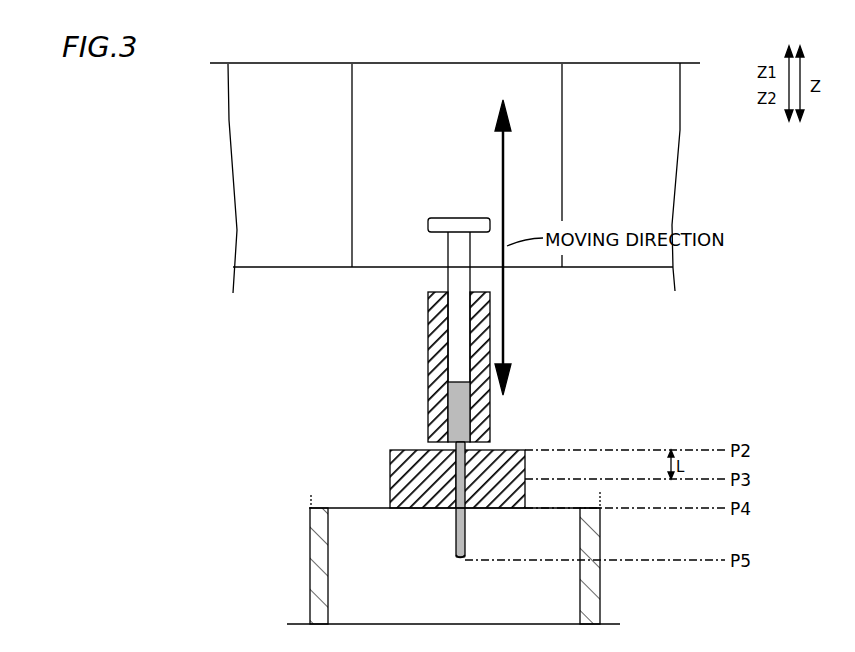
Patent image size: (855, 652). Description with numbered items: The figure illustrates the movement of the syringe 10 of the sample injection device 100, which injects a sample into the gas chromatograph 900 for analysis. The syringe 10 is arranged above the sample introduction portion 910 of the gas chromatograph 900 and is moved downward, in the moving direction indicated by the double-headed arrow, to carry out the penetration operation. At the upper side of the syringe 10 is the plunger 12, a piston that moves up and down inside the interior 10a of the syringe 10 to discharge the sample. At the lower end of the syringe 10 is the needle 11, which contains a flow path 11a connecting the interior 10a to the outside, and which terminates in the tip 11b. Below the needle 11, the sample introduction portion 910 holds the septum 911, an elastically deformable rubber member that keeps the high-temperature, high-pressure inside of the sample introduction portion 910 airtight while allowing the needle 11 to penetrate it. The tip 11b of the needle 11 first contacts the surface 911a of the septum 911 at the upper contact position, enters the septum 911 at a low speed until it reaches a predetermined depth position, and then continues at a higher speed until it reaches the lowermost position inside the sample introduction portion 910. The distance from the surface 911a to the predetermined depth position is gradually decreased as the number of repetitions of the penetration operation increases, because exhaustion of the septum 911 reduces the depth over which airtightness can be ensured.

The sample injection device 100 is at (307, 290).
The plunger 12 is at (447, 262).
The syringe 10 is at (426, 356).
The interior of the syringe 10a is at (474, 412).
The septum 911 is at (401, 449).
The surface of the septum 911a is at (513, 449).
The needle 11 is at (455, 550).
The flow path 11a is at (468, 521).
The tip of the needle 11b is at (462, 559).
The gas chromatograph 900 is at (348, 492).
The sample introduction portion 910 is at (311, 563).